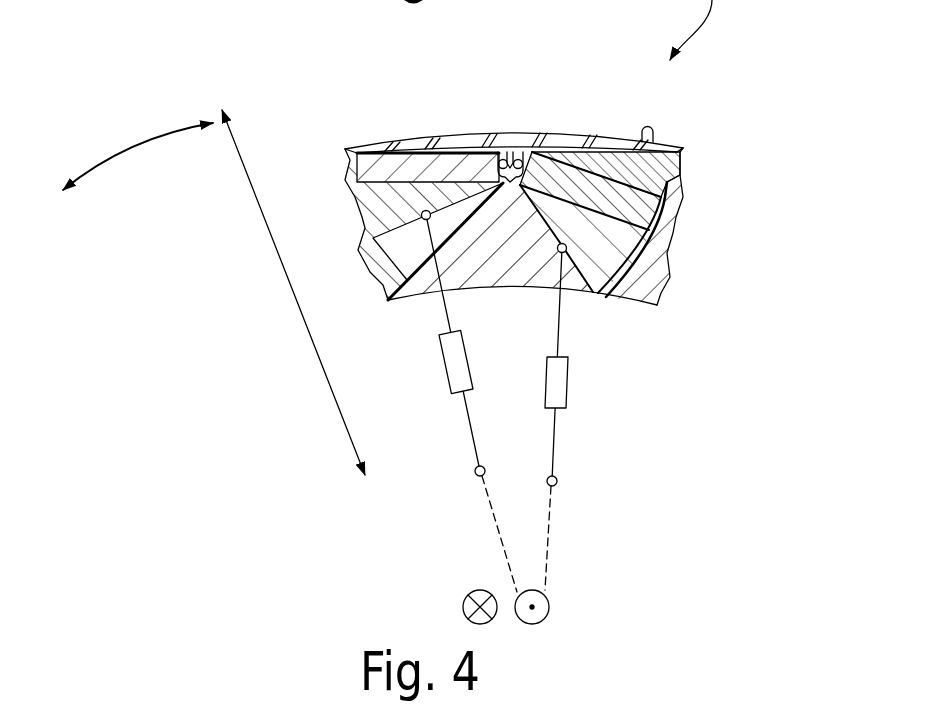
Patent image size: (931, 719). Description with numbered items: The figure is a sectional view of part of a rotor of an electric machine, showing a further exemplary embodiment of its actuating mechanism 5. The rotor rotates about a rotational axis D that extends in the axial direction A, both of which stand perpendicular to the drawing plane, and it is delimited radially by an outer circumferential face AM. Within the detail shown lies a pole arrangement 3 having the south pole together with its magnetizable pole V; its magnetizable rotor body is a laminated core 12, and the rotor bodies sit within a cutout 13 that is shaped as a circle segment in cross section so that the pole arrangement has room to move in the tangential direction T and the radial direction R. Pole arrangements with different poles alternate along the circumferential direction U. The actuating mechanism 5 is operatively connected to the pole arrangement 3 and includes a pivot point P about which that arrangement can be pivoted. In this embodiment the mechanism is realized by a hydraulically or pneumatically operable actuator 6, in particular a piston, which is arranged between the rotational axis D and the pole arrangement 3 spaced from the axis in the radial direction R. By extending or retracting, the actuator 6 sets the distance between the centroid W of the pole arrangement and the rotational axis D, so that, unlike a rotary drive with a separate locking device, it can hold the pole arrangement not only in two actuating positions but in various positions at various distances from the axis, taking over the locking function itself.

The pole arrangement 3 is at (547, 120).
The actuating mechanism 5 is at (635, 312).
The hydraulically or pneumatically operable actuator 6 is at (447, 375).
The magnetizable laminated core 12 is at (372, 210).
The cutout 13 is at (539, 224).
The pivot point P is at (510, 150).
The centroid W is at (539, 232).
The outer circumferential face AM is at (648, 127).
The magnetizable pole V is at (592, 258).
The radial direction R is at (292, 292).
The tangential direction T is at (138, 186).
The circumferential direction U is at (128, 150).
The rotational axis D is at (559, 550).
The axial direction A is at (550, 607).